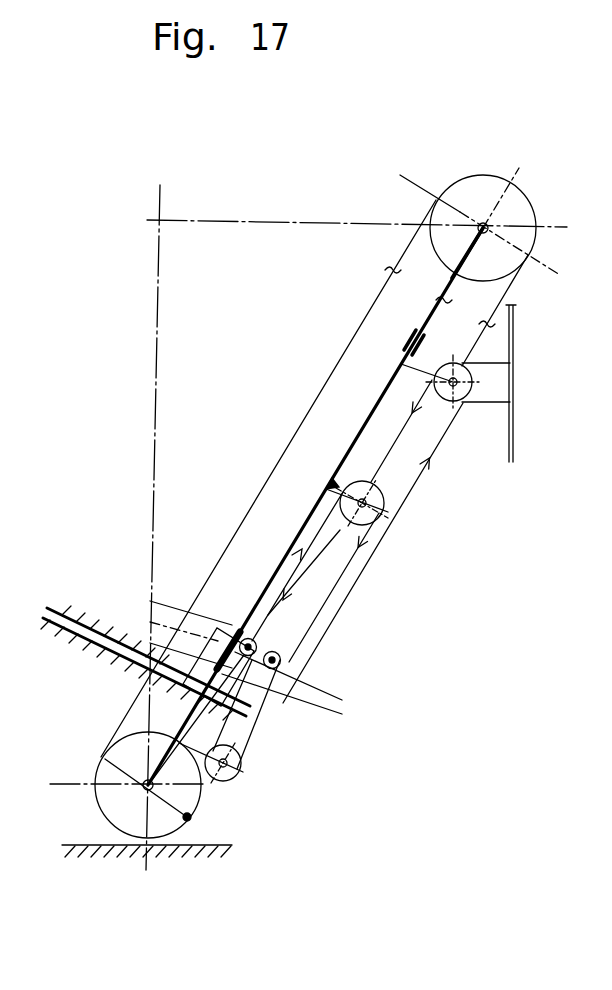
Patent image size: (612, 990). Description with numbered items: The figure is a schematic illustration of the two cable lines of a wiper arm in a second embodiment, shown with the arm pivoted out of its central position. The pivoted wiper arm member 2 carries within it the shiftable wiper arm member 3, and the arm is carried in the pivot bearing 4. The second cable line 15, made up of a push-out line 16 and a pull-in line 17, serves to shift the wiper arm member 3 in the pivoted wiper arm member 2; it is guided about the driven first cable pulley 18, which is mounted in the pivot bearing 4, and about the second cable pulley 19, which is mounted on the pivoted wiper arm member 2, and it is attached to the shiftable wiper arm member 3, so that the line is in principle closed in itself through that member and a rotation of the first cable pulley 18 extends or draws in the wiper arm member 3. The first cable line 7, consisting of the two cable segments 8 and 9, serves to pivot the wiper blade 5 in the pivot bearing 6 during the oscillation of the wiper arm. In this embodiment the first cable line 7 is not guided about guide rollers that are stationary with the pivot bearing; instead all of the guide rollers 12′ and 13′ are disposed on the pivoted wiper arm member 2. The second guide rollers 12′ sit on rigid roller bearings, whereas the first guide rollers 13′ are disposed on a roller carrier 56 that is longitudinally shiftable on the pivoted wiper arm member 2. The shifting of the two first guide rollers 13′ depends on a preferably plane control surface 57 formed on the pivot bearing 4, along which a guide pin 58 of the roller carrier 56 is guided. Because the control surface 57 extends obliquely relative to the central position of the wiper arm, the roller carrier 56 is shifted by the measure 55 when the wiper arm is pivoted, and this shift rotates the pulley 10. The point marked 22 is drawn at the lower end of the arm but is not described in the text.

The pivoted wiper arm member 2 is at (478, 225).
The wiper arm member 3 is at (410, 340).
The pivot bearing 4 is at (177, 850).
The wiper blade 5 is at (515, 448).
The pivot bearing 6 is at (470, 378).
The first cable line 7 is at (385, 563).
The cable segment 8 is at (318, 590).
The cable segment 9 is at (255, 672).
The pulley 10 is at (465, 400).
The second guide rollers 12′ is at (385, 512).
The first guide rollers 13′ is at (283, 663).
The second cable line 15 is at (340, 340).
The push-out line 16 is at (407, 250).
The pull-in line 17 is at (511, 300).
The first cable pulley 18 is at (112, 805).
The second cable pulley 19 is at (476, 192).
The pivot 22 is at (187, 817).
The measure 55 is at (170, 592).
The roller carrier 56 is at (247, 697).
The control surface 57 is at (87, 640).
The guide pin 58 is at (215, 645).